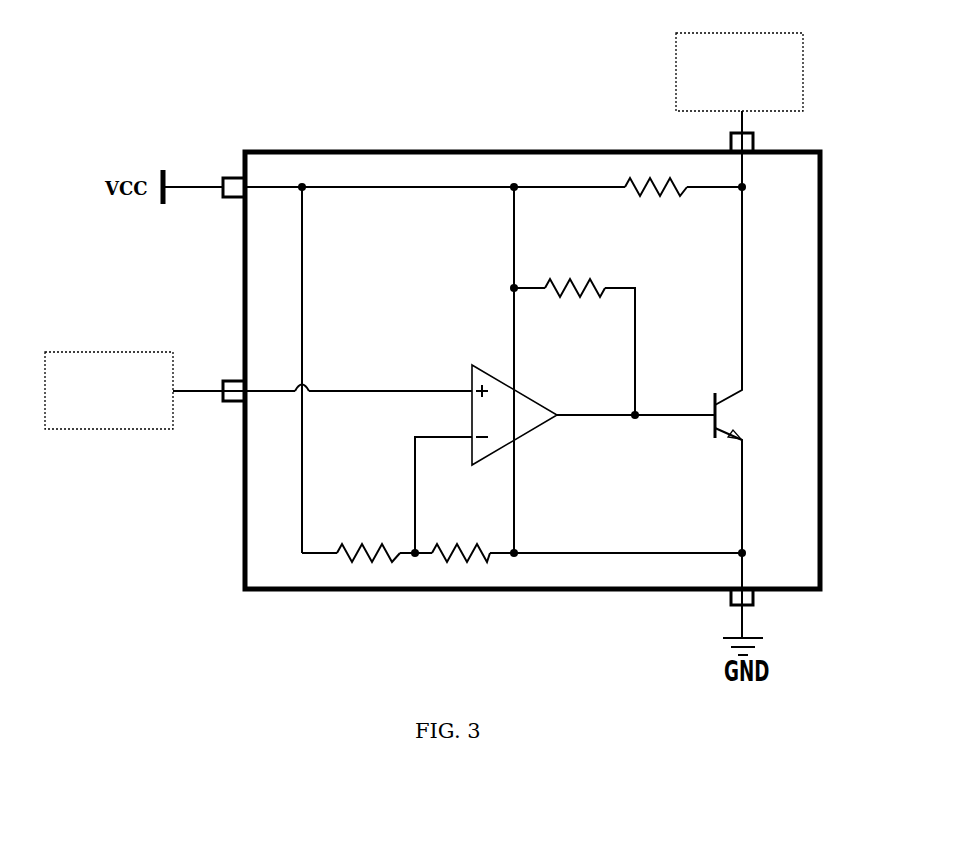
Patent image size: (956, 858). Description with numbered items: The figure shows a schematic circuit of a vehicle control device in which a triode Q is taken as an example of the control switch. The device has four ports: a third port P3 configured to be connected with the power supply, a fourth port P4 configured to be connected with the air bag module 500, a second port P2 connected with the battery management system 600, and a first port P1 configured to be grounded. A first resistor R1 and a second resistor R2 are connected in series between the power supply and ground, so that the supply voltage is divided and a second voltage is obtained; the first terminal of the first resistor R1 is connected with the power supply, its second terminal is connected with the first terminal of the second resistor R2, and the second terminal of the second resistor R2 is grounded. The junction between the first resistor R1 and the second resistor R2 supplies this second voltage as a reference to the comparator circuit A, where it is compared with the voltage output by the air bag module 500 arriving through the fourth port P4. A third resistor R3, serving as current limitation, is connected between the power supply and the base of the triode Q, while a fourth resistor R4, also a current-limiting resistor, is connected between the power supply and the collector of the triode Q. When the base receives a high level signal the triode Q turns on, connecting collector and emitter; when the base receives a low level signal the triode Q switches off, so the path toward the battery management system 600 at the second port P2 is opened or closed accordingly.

The air bag module 500 is at (127, 352).
The battery management system 600 is at (765, 33).
The first port P1 is at (759, 580).
The second port P2 is at (757, 160).
The third port P3 is at (252, 199).
The fourth port P4 is at (254, 402).
The first resistor R1 is at (368, 536).
The second resistor R2 is at (461, 536).
The third resistor R3 is at (575, 308).
The fourth resistor R4 is at (656, 210).
The comparator circuit A is at (514, 415).
The triode Q is at (740, 370).